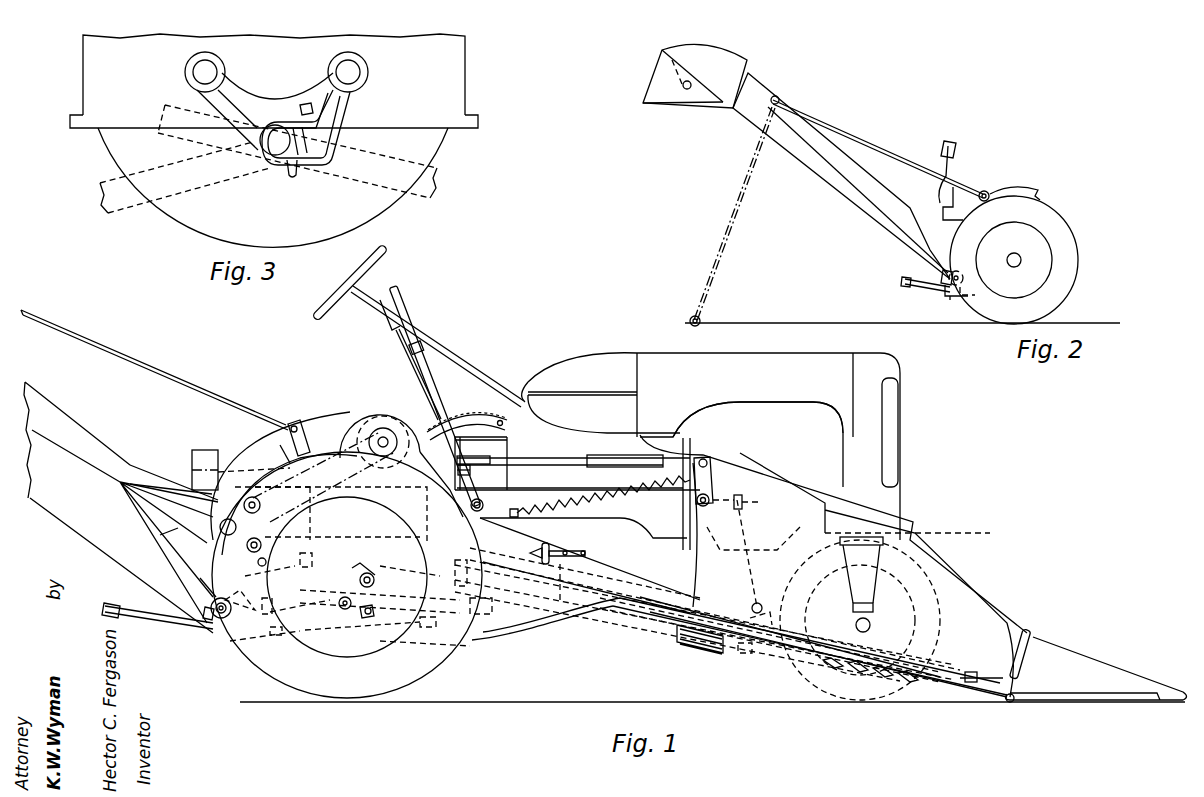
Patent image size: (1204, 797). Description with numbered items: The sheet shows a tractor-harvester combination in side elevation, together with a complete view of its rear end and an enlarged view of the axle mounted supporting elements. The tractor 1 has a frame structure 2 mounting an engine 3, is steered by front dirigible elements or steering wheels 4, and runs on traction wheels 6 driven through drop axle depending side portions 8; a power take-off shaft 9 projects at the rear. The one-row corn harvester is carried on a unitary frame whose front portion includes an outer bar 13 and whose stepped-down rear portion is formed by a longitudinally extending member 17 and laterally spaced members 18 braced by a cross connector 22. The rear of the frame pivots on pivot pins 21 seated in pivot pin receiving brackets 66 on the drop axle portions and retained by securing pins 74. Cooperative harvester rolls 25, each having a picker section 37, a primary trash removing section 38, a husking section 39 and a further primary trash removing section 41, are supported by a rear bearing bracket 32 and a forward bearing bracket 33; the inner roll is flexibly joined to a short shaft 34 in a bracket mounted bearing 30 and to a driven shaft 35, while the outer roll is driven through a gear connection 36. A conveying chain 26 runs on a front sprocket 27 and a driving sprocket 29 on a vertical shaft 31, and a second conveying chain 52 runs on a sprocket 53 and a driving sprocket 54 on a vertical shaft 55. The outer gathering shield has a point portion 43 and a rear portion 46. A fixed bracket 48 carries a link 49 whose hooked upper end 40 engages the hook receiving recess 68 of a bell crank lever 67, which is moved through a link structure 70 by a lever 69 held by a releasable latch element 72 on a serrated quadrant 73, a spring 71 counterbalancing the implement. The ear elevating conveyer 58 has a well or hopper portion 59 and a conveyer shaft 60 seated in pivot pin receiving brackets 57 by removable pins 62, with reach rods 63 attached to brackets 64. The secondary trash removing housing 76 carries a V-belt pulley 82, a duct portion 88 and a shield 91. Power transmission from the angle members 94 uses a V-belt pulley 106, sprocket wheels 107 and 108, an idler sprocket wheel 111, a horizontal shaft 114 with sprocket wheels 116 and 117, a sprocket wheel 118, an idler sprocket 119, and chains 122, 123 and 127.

In FIG. 2, the tractor 1 is at (1060, 194).
In FIG. 1, the tractor 1 is at (752, 385).
In FIG. 1, the frame structure 2 is at (574, 489).
In FIG. 1, the engine 3 is at (780, 415).
In FIG. 1, the front dirigible elements or steering wheels 4 is at (808, 682).
In FIG. 2, the traction wheels 6 is at (1075, 252).
In FIG. 1, the traction wheels 6 is at (438, 668).
In FIG. 3, the depending side portions 8 is at (465, 64).
In FIG. 1, the depending side portions 8 is at (362, 633).
In FIG. 1, the power take-off shaft 9 is at (324, 479).
In FIG. 1, the outer bar 13 is at (605, 613).
In FIG. 1, the longitudinally extending member 17 is at (425, 648).
In FIG. 2, the laterally spaced members 18 is at (918, 285).
In FIG. 1, the laterally spaced members 18 is at (140, 615).
In FIG. 3, the pivot pins 21 is at (277, 153).
In FIG. 1, the pivot pins 21 is at (340, 612).
In FIG. 2, the cross connector 22 is at (902, 283).
In FIG. 1, the cross connector 22 is at (118, 606).
In FIG. 1, the harvester rolls 25 is at (659, 641).
In FIG. 1, the conveying chain 26 is at (882, 657).
In FIG. 1, the front sprocket 27 is at (977, 678).
In FIG. 1, the driving sprocket 29 is at (456, 566).
In FIG. 1, the bracket mounted bearing 30 is at (380, 589).
In FIG. 1, the vertical shaft 31 is at (380, 598).
In FIG. 1, the rear bearing bracket 32 is at (497, 612).
In FIG. 1, the forward bearing bracket 33 is at (745, 655).
In FIG. 1, the short shaft 34 is at (410, 564).
In FIG. 1, the driven shaft 35 is at (342, 536).
In FIG. 1, the gear connection 36 is at (516, 564).
In FIG. 1, the picker section 37 is at (860, 680).
In FIG. 1, the primary trash removing section 38 is at (708, 654).
In FIG. 1, the husking section 39 is at (630, 632).
In FIG. 1, the hooked upper end 40 is at (745, 504).
In FIG. 1, the primary trash removing section 41 is at (548, 622).
In FIG. 1, the point portion 43 is at (1145, 684).
In FIG. 1, the rear portion 46 is at (698, 586).
In FIG. 1, the fixed bracket 48 is at (762, 600).
In FIG. 1, the link 49 is at (742, 572).
In FIG. 1, the conveying chain 52 is at (424, 630).
In FIG. 1, the sprocket 53 is at (476, 636).
In FIG. 1, the driving sprocket 54 is at (258, 562).
In FIG. 1, the vertical shaft 55 is at (261, 574).
In FIG. 2, the pivot pin receiving brackets 57 is at (950, 292).
In FIG. 1, the pivot pin receiving brackets 57 is at (204, 612).
In FIG. 2, the ear elevating conveyer 58 is at (817, 174).
In FIG. 1, the ear elevating conveyer 58 is at (72, 491).
In FIG. 2, the well or hopper portion 59 is at (930, 224).
In FIG. 1, the well or hopper portion 59 is at (172, 533).
In FIG. 2, the conveyer shaft 60 is at (958, 273).
In FIG. 1, the conveyer shaft 60 is at (220, 620).
In FIG. 2, the removable pins 62 is at (944, 274).
In FIG. 1, the removable pins 62 is at (212, 590).
In FIG. 2, the reach rods 63 is at (893, 153).
In FIG. 1, the reach rods 63 is at (147, 361).
In FIG. 2, the brackets 64 is at (993, 190).
In FIG. 1, the brackets 64 is at (310, 433).
In FIG. 3, the pivot pin receiving brackets 66 is at (350, 97).
In FIG. 1, the pivot pin receiving brackets 66 is at (368, 572).
In FIG. 1, the bell crank lever 67 is at (712, 461).
In FIG. 1, the hook receiving recess 68 is at (710, 495).
In FIG. 1, the lever 69 is at (402, 306).
In FIG. 1, the link structure 70 is at (559, 463).
In FIG. 1, the spring 71 is at (650, 498).
In FIG. 1, the releasable latch element 72 is at (425, 396).
In FIG. 1, the serrated quadrant 73 is at (473, 416).
In FIG. 3, the securing pins 74 is at (300, 108).
In FIG. 1, the securing pins 74 is at (372, 617).
In FIG. 1, the housing 76 is at (378, 406).
In FIG. 1, the V-belt pulley 82 is at (372, 447).
In FIG. 1, the duct portion 88 is at (470, 471).
In FIG. 1, the pulley and sprocket wheel shield 91 is at (284, 450).
In FIG. 1, the angle members 94 is at (192, 463).
In FIG. 1, the V-belt pulley 106 is at (171, 484).
In FIG. 1, the sprocket wheel 107 is at (255, 470).
In FIG. 1, the sprocket wheel 108 is at (208, 461).
In FIG. 1, the idler sprocket wheel 111 is at (220, 528).
In FIG. 1, the horizontal shaft 114 is at (244, 601).
In FIG. 1, the sprocket wheel 116 is at (300, 608).
In FIG. 1, the sprocket wheel 117 is at (267, 613).
In FIG. 1, the sprocket wheel 118 is at (265, 644).
In FIG. 1, the idler sprocket 119 is at (247, 546).
In FIG. 1, the chain 122 is at (286, 483).
In FIG. 1, the chain 123 is at (316, 563).
In FIG. 1, the chain 127 is at (277, 639).